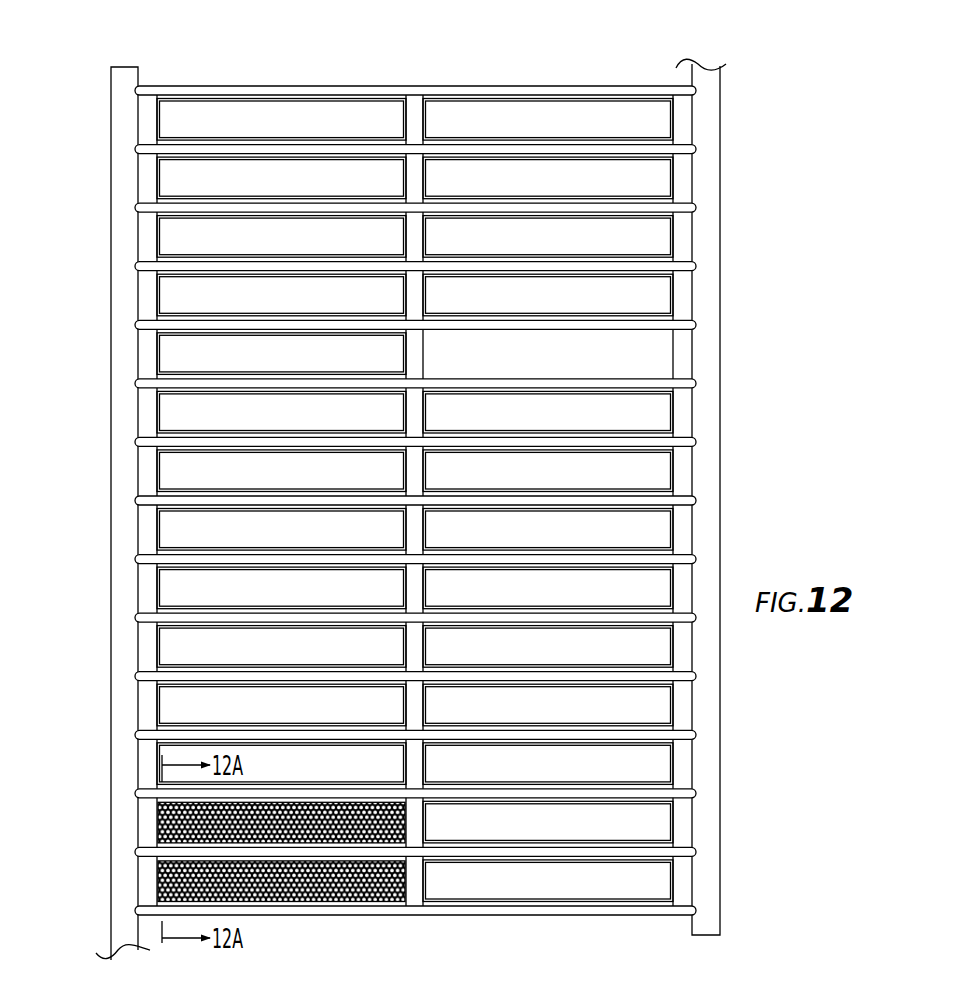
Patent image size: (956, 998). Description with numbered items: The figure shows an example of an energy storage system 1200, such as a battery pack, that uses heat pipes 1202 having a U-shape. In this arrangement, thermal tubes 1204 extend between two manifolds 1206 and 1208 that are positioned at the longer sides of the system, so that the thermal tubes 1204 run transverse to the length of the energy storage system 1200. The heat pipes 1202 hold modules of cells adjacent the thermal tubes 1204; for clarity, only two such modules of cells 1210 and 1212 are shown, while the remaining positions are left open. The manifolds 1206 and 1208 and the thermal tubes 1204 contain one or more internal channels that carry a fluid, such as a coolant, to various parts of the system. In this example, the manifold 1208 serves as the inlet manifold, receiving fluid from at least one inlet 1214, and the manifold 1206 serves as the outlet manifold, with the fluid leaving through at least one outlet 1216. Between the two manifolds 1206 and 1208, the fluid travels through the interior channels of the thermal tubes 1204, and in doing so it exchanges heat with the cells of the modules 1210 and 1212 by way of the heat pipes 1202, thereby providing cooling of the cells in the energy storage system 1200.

The energy storage system 1200 is at (752, 738).
The heat pipes 1202 is at (657, 413).
The thermal tubes 1204 is at (494, 553).
The manifold 1206 is at (700, 302).
The manifold 1208 is at (153, 481).
The module of cells 1210 is at (338, 830).
The module of cells 1212 is at (270, 880).
The inlet 1214 is at (111, 940).
The outlet 1216 is at (720, 93).